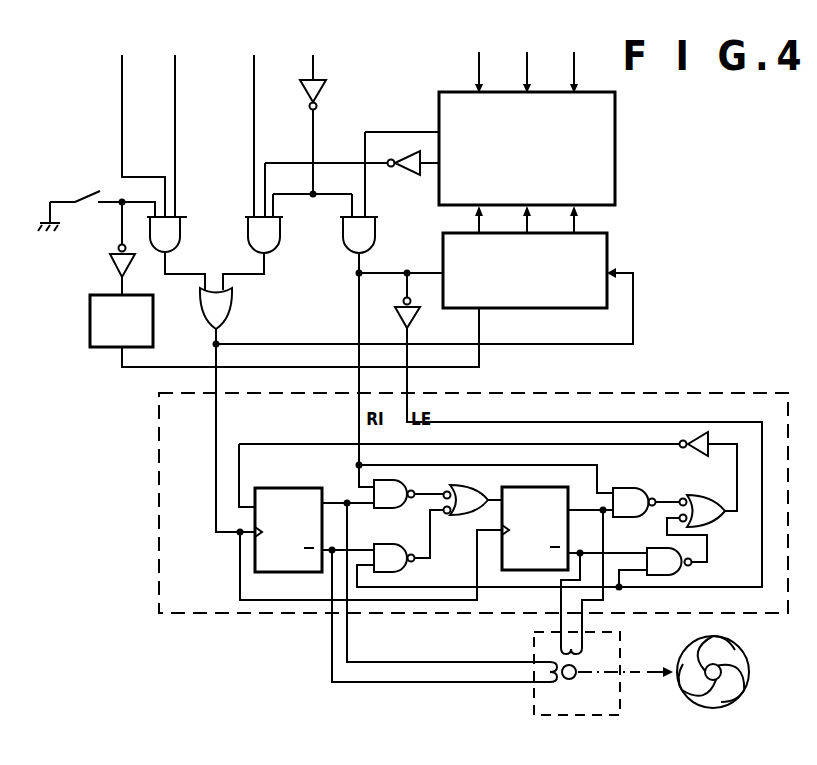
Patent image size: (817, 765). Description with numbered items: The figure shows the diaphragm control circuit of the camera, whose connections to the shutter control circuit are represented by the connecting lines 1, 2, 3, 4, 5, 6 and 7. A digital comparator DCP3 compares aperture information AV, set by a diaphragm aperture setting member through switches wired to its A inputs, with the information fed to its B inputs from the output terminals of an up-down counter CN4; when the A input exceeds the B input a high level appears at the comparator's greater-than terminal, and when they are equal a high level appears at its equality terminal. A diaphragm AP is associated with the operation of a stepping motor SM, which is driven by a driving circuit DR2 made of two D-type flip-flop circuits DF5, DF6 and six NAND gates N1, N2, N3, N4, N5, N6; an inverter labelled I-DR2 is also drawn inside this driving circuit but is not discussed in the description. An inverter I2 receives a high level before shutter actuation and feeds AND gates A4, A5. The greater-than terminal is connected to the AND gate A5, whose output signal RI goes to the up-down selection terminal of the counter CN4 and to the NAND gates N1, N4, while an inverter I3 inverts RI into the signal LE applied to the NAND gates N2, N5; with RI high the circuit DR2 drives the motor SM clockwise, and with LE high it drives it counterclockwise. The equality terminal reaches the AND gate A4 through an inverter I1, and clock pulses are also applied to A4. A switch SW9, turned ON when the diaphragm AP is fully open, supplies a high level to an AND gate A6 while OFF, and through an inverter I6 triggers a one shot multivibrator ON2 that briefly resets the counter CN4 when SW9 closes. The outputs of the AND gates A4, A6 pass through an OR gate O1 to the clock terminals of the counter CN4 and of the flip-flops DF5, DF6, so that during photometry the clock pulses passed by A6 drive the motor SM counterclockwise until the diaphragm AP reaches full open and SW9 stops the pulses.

The connecting line 1 is at (479, 58).
The connecting line 2 is at (527, 58).
The connecting line 3 is at (574, 58).
The connecting line 4 is at (136, 121).
The connecting line 5 is at (175, 121).
The connecting line 6 is at (254, 121).
The connecting line 7 is at (312, 121).
The switch SW9 is at (96, 201).
The inverter I1 is at (352, 184).
The inverter I2 is at (323, 96).
The inverter I3 is at (559, 429).
The inverter I6 is at (114, 248).
The one shot multivibrator circuit ON2 is at (284, 331).
The AND gate A4 is at (253, 253).
The AND gate A5 is at (476, 355).
The AND gate A6 is at (176, 253).
The OR gate O1 is at (416, 434).
The digital comparator DCP3 is at (490, 154).
The up-down counter CN4 is at (525, 257).
The driving circuit DR2 is at (473, 503).
The D-type flip-flop circuit DF5 is at (394, 563).
The D-type flip-flop circuit DF6 is at (574, 567).
The NAND gate N1 is at (409, 494).
The NAND gate N2 is at (409, 541).
The NAND gate N3 is at (473, 500).
The NAND gate N4 is at (646, 502).
The NAND gate N5 is at (654, 569).
The NAND gate N6 is at (702, 503).
The inverter of driver I-DR2 is at (684, 448).
The stepping motor SM is at (603, 673).
The diaphragm AP is at (705, 676).